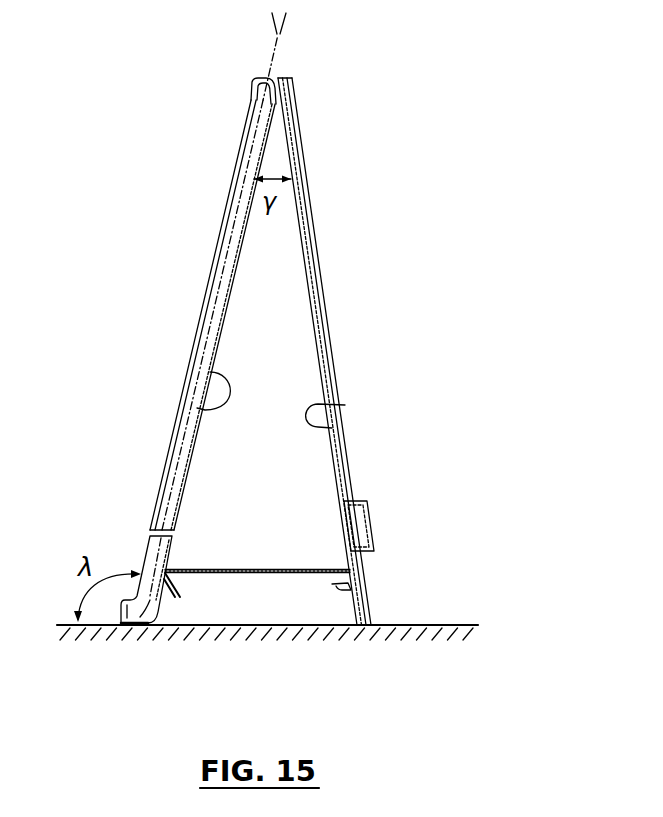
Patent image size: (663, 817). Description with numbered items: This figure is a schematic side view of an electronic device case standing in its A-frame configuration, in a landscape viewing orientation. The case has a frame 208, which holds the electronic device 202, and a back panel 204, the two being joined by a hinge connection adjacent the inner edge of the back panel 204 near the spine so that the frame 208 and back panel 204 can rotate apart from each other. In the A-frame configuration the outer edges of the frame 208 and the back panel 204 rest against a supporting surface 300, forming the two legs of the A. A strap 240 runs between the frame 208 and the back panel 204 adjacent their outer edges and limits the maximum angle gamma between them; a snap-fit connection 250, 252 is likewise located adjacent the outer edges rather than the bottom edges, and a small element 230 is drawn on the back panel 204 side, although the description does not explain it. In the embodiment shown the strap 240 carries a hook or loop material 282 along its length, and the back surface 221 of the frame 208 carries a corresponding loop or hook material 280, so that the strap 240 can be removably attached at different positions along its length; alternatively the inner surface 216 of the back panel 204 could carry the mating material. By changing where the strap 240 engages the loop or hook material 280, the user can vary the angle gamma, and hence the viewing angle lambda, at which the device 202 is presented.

The electronic device 202 is at (326, 276).
The back panel 204 is at (268, 63).
The frame 208 is at (228, 243).
The inner surface 216 is at (345, 405).
The back surface 221 is at (212, 372).
The spacer block 230 is at (366, 520).
The strap 240 is at (260, 574).
The snap-fit connection 250 is at (343, 593).
The snap-fit connection 252 is at (150, 627).
The loop or hook material 280 is at (160, 568).
The hook or loop material 282 is at (170, 572).
The surface 300 is at (450, 623).